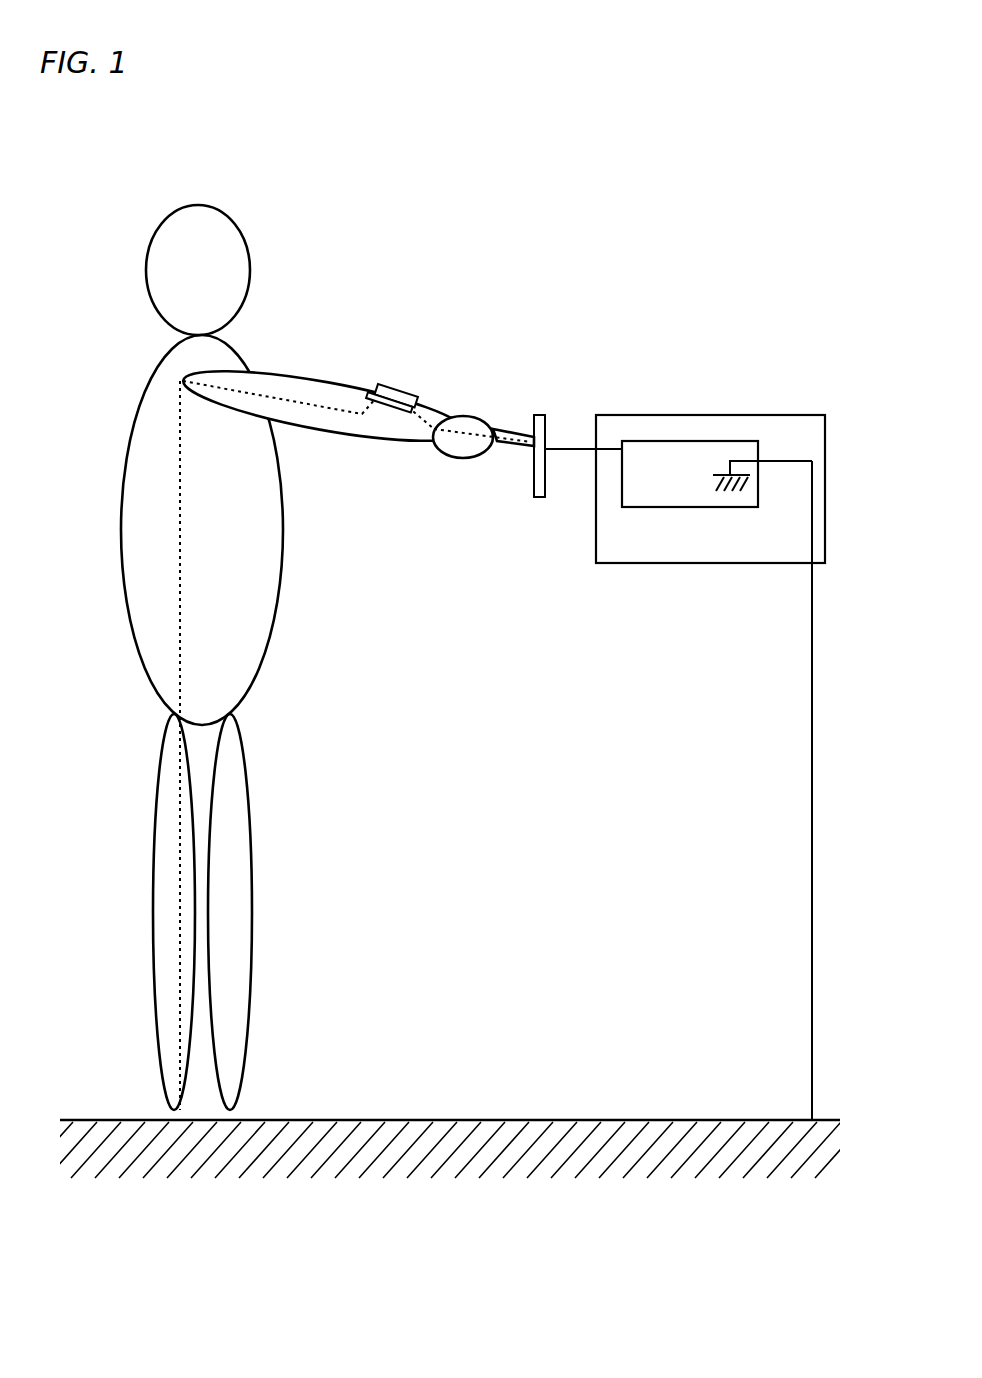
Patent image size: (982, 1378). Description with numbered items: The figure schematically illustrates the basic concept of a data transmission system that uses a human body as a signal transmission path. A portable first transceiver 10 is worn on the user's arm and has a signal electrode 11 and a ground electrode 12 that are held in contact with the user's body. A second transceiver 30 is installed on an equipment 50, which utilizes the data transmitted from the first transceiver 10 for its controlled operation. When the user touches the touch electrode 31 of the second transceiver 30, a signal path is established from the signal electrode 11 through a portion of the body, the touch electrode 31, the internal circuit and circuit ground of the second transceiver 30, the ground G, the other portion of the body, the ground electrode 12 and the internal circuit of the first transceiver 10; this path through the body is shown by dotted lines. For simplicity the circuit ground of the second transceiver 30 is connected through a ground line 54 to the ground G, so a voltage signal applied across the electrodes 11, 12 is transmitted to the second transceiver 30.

The portable transceiver 10 is at (433, 385).
The signal electrode 11 is at (423, 410).
The ground electrode 12 is at (372, 395).
The associated transceiver 30 is at (702, 440).
The touch electrode 31 is at (538, 413).
The equipment 50 is at (650, 563).
The ground line 54 is at (812, 862).
The ground G is at (445, 1138).